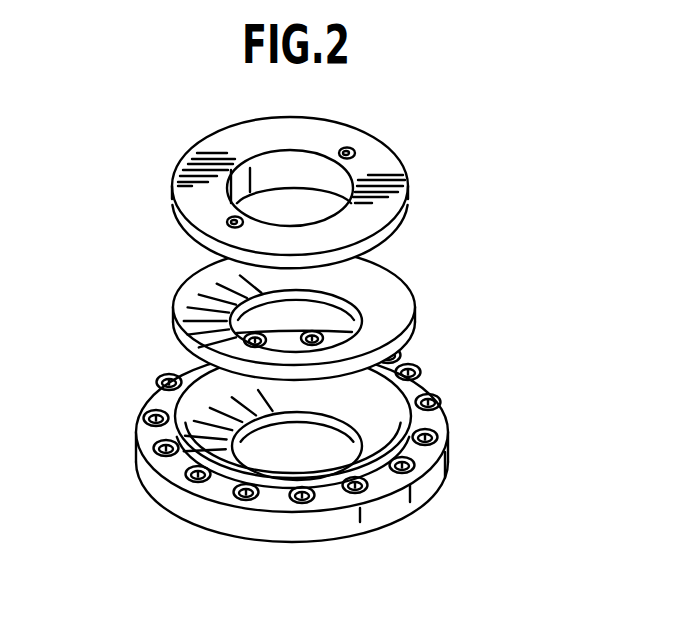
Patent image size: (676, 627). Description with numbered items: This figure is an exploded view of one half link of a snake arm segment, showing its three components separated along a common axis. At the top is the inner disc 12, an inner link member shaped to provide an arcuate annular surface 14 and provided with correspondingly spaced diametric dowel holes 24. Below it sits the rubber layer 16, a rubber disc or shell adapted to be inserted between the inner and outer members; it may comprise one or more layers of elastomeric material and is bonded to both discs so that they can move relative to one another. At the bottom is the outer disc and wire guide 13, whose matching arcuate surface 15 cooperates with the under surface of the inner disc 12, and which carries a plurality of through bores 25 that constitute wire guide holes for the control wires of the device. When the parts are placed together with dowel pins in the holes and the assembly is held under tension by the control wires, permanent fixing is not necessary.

The inner disc 12 is at (287, 156).
The outer disc and wire guide 13 is at (296, 426).
The arcuate annular surface 14 is at (197, 257).
The arcuate surface 15 is at (140, 398).
The rubber layer 16 is at (385, 277).
The dowel holes 24 is at (354, 150).
The through bores 25 is at (432, 430).